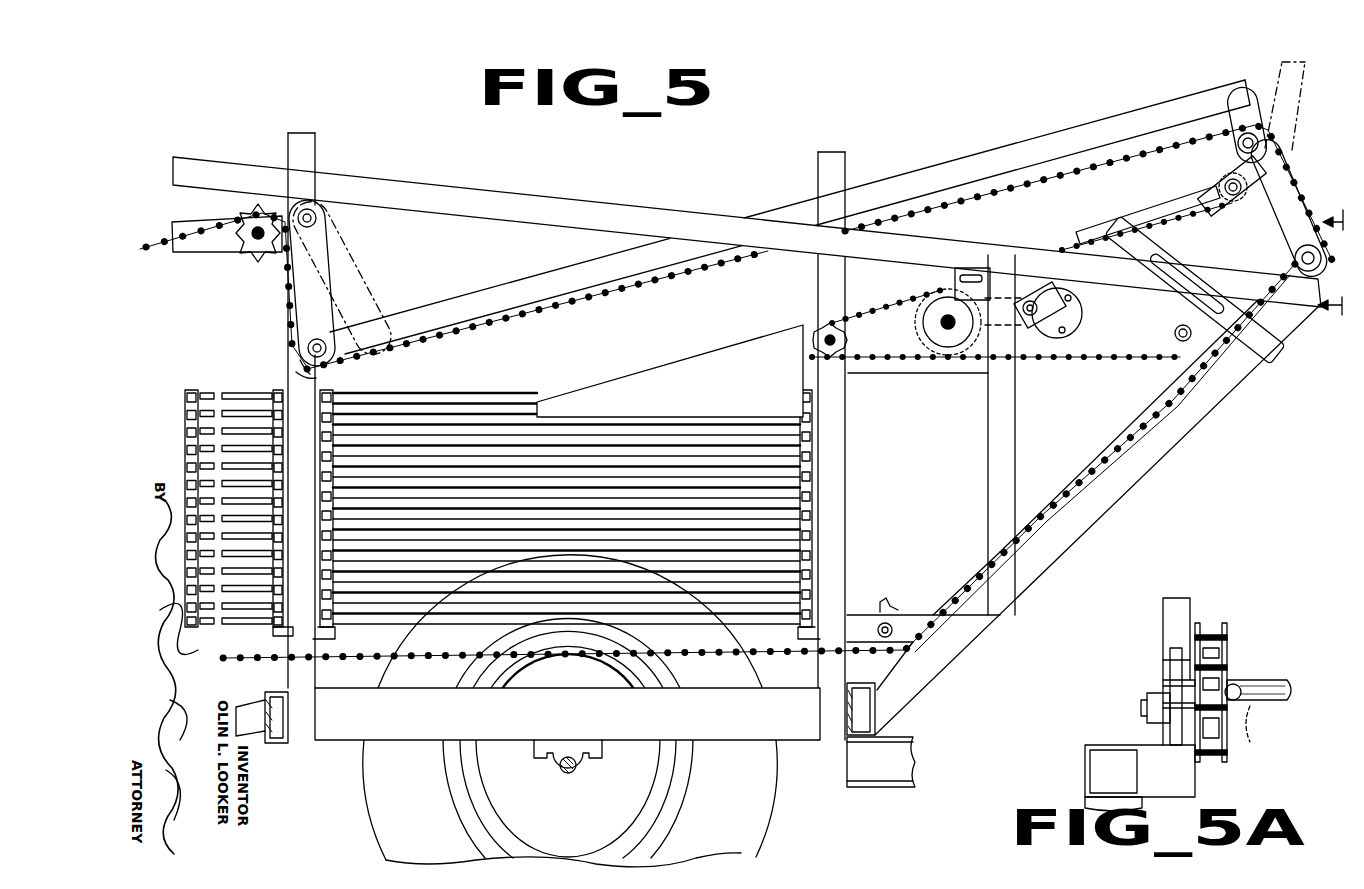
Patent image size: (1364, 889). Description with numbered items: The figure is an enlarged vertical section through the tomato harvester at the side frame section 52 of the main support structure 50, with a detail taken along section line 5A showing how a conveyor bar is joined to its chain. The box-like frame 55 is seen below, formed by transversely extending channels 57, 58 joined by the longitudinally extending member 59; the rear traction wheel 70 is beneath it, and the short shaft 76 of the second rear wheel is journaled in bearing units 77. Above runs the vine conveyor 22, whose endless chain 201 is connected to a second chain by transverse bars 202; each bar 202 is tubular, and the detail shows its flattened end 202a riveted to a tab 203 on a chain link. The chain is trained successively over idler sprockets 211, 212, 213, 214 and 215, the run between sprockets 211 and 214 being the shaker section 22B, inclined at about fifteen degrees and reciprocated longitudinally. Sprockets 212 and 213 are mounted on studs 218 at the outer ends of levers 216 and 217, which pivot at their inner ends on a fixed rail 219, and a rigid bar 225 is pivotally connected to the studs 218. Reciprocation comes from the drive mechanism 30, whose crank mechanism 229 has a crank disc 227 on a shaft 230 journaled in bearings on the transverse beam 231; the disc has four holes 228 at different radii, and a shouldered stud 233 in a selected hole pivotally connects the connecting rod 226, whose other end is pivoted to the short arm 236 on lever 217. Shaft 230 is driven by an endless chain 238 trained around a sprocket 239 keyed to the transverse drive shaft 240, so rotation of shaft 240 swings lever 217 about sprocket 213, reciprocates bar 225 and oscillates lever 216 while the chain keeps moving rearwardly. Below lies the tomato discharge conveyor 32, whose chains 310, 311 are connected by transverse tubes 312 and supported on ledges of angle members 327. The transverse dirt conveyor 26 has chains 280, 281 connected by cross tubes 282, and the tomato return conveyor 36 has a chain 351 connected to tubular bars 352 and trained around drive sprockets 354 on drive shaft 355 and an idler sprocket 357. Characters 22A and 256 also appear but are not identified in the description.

In FIG. 5, the main support structure 50 is at (385, 180).
In FIG. 5, the longitudinal side section 52 is at (513, 198).
In FIG. 5A, the longitudinal side section 52 is at (1116, 746).
In FIG. 5, the fixed rail 219 is at (639, 214).
In FIG. 5, the rigid bar 225 is at (468, 305).
In FIG. 5, the stud 218 is at (310, 346).
In FIG. 5, the lever 217 is at (1304, 150).
In FIG. 5A, the lever 217 is at (1200, 608).
In FIG. 5, the lever 216 is at (308, 308).
In FIG. 5, the idler sprocket 213 is at (1236, 161).
In FIG. 5, the short arm 236 is at (1234, 180).
In FIG. 5, the drive mechanism 30 is at (1204, 199).
In FIG. 5, the transverse bar 202 is at (606, 298).
In FIG. 5A, the transverse bar 202 is at (1254, 698).
In FIG. 5, the endless chain 201 is at (642, 280).
In FIG. 5A, the endless chain 201 is at (1228, 650).
In FIG. 5, the shaker section 22B is at (956, 190).
In FIG. 5, the holes 228 is at (1070, 300).
In FIG. 5, the connecting rod 226 is at (1172, 226).
In FIG. 5, the chain 351 is at (1086, 248).
In FIG. 5, the idler sprocket 357 is at (1238, 236).
In FIG. 5, the strut 256 is at (1180, 284).
In FIG. 5, the idler sprocket 214 is at (1302, 276).
In FIG. 5A, the idler sprocket 214 is at (1226, 736).
In FIG. 5, the tomato return conveyor 36 is at (878, 296).
In FIG. 5, the transverse beam 231 is at (990, 292).
In FIG. 5, the shaft 230 is at (1032, 282).
In FIG. 5, the crank disc 227 is at (1082, 311).
In FIG. 5, the crank mechanism 229 is at (1082, 327).
In FIG. 5, the sprocket 239 is at (924, 323).
In FIG. 5, the transverse drive shaft 240 is at (942, 326).
In FIG. 5, the transverse drive shaft 355 is at (812, 346).
In FIG. 5, the drive sprocket 354 is at (814, 363).
In FIG. 5, the endless chain 238 is at (942, 353).
In FIG. 5, the shouldered stud 233 is at (1025, 357).
In FIG. 5, the transverse tubular bar 352 is at (1112, 368).
In FIG. 5, the vine conveyor 22 is at (147, 242).
In FIG. 5A, the vine conveyor 22 is at (1244, 636).
In FIG. 5, the chain drive sprocket 22A is at (255, 216).
In FIG. 5, the idler sprocket 211 is at (252, 256).
In FIG. 5, the idler sprocket 212 is at (302, 368).
In FIG. 5, the transverse dirt conveyor 26 is at (206, 386).
In FIG. 5, the endless chain 280 is at (185, 421).
In FIG. 5, the cross tube 282 is at (246, 398).
In FIG. 5, the endless chain 281 is at (274, 624).
In FIG. 5, the tomato discharge conveyor 32 is at (587, 484).
In FIG. 5, the endless chain 310 is at (336, 406).
In FIG. 5, the endless chain 311 is at (810, 458).
In FIG. 5, the transverse tube 312 is at (604, 426).
In FIG. 5, the angle member 327 is at (334, 632).
In FIG. 5, the idler sprocket 215 is at (892, 606).
In FIG. 5, the longitudinally extending member 59 is at (567, 714).
In FIG. 5, the box-like frame 55 is at (358, 740).
In FIG. 5, the transversely extending channel 57 is at (282, 739).
In FIG. 5, the transversely extending channel 58 is at (846, 738).
In FIG. 5, the rear traction wheel 70 is at (570, 711).
In FIG. 5, the short shaft 76 is at (576, 766).
In FIG. 5, the bearing unit 77 is at (576, 787).
In FIG. 5, the section line 5A— 5A is at (1319, 269).
In FIG. 5A, the flattened end 202a is at (1238, 682).
In FIG. 5A, the tab 203 is at (1270, 725).